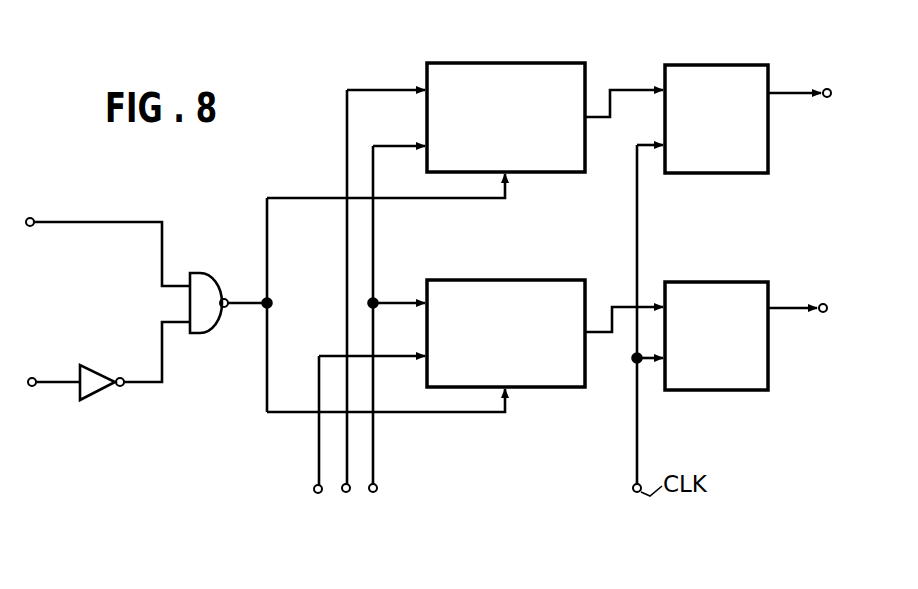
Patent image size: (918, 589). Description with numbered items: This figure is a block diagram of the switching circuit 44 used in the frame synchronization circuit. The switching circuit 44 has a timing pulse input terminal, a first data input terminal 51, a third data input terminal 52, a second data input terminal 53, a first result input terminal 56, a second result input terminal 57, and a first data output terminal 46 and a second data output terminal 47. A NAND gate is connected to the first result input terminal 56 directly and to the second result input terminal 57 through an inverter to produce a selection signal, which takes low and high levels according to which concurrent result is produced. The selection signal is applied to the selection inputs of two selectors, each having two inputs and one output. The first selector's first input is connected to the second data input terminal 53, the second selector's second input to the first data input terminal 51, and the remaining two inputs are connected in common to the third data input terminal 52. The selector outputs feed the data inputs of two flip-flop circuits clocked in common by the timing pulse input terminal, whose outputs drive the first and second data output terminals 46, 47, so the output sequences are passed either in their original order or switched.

The switching circuit 44 is at (190, 448).
The first data output terminal 46 is at (829, 90).
The second data output terminal 47 is at (825, 304).
The first data input terminal 51 is at (314, 489).
The third data input terminal 52 is at (347, 493).
The second data input terminal 53 is at (377, 490).
The first result input terminal 56 is at (32, 218).
The second result input terminal 57 is at (34, 378).